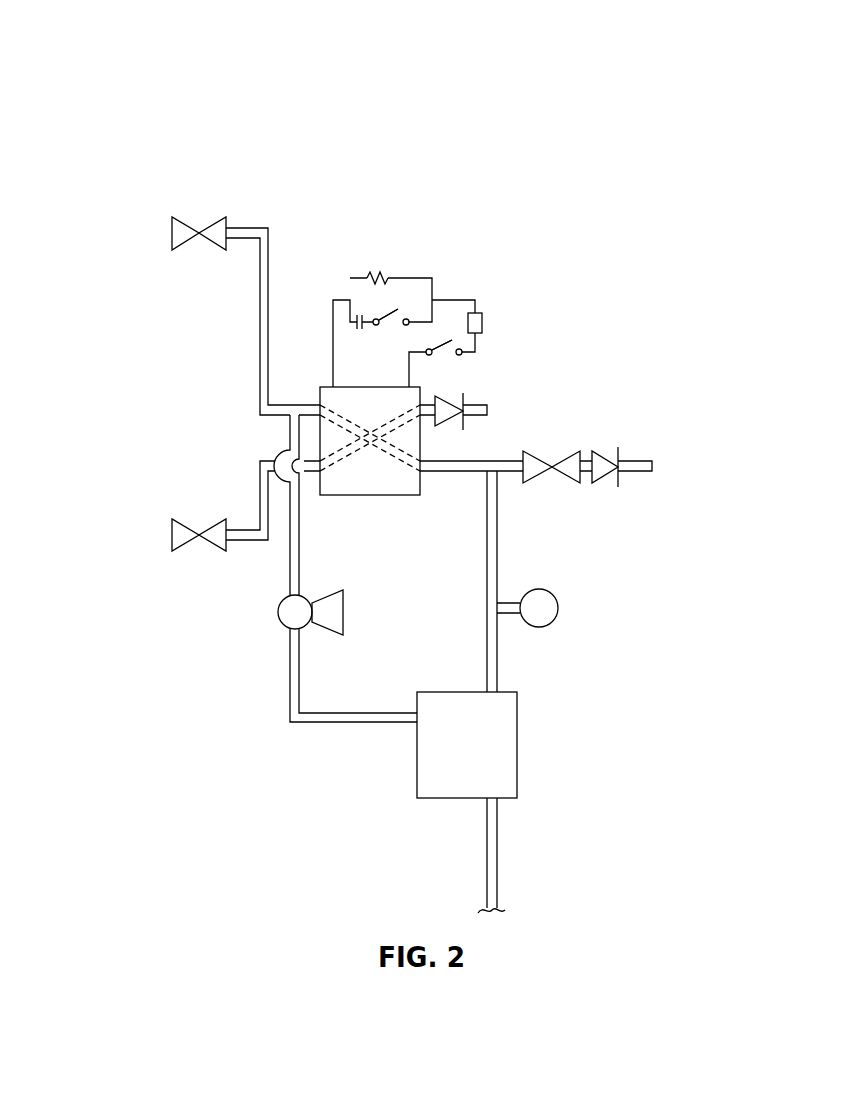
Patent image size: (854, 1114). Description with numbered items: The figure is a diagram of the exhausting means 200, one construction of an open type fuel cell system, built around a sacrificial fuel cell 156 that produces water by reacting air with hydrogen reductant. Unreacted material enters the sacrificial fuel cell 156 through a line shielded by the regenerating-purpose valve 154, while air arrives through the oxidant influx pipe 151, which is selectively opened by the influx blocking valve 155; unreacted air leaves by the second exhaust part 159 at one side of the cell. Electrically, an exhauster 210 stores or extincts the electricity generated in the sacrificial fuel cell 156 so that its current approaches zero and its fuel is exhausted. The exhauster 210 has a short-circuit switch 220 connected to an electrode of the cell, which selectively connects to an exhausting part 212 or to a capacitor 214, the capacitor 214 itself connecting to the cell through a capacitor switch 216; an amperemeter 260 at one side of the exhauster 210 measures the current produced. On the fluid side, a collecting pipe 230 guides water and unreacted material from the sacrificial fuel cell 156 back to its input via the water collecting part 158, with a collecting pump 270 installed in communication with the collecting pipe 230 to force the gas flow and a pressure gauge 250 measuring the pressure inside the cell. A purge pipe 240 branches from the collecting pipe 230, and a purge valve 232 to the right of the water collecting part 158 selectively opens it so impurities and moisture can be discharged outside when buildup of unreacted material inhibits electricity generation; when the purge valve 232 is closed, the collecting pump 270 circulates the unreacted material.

The exhausting means 200 is at (499, 122).
The oxidant influx pipe 151 is at (265, 498).
The regenerating-purpose valve 154 is at (172, 233).
The influx blocking valve 155 is at (172, 535).
The sacrificial fuel cell 156 is at (340, 438).
The collecting part 158 is at (508, 750).
The second exhaust part 159 is at (488, 410).
The exhauster 210 is at (377, 283).
The exhausting part 212 is at (370, 275).
The capacitor 214 is at (357, 324).
The capacitor switch 216 is at (387, 310).
The short-circuit switch 220 is at (443, 350).
The collecting pipe 230 is at (297, 682).
The purge valve 232 is at (535, 467).
The purge pipe 240 is at (653, 465).
The pressure gauge 250 is at (560, 607).
The amperemeter 260 is at (483, 320).
The collecting pump 270 is at (287, 612).